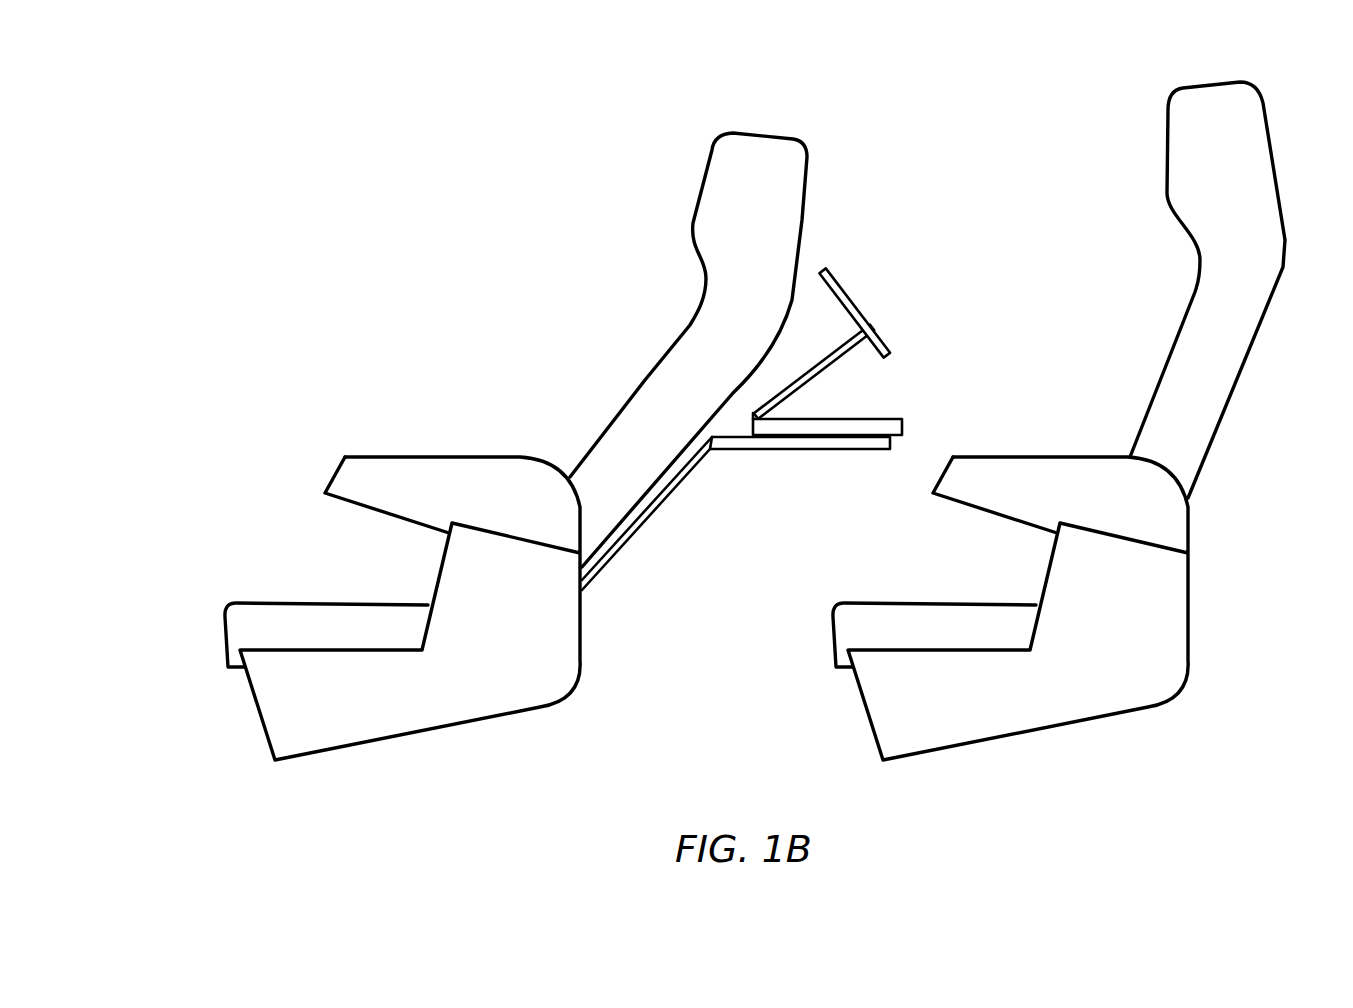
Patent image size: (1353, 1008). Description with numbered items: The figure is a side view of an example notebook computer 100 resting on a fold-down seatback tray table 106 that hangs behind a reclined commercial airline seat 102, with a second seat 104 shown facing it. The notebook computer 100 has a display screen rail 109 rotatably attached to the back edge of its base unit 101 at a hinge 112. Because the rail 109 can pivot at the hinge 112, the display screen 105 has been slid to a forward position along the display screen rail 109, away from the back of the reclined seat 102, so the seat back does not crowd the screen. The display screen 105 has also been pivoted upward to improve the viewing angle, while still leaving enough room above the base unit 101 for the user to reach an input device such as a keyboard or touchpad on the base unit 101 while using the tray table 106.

The notebook computer 100 is at (788, 409).
The notebook computer base unit 101 is at (887, 421).
The reclined commercial airline seat 102 is at (786, 182).
The second seat back 104 is at (1193, 175).
The display screen 105 is at (842, 282).
The fold-down seatback tray table 106 is at (797, 450).
The display screen rail 109 is at (834, 361).
The hinge 112 is at (753, 415).